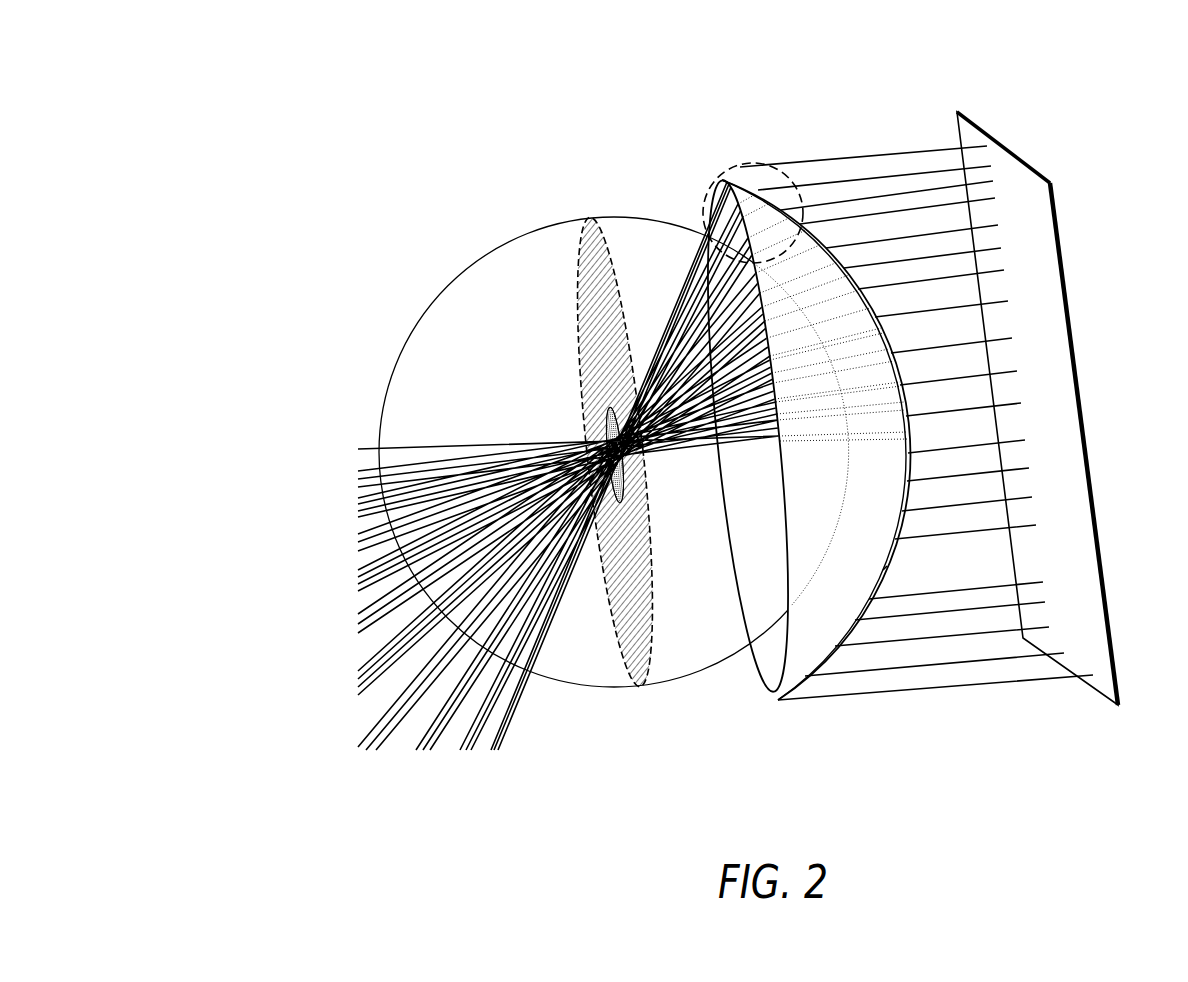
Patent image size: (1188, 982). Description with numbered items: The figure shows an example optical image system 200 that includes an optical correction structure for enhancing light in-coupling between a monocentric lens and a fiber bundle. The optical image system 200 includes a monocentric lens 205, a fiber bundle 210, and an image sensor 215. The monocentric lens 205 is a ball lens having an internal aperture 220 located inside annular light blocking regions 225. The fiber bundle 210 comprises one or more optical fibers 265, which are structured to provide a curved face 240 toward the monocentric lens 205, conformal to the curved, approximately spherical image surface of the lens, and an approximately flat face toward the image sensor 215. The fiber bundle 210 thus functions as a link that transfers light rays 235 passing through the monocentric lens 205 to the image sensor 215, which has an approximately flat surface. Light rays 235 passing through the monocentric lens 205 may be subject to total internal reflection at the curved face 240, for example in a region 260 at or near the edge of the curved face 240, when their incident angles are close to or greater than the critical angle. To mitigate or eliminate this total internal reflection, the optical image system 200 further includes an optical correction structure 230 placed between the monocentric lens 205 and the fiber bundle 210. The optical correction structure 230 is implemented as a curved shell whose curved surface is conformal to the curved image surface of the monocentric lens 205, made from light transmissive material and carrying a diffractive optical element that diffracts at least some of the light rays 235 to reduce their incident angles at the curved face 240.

The optical image system 200 is at (306, 141).
The monocentric lens 205 is at (519, 315).
The fiber bundle 210 is at (1040, 555).
The image sensor 215 is at (1070, 300).
The internal aperture 220 is at (604, 410).
The annular light blocking regions 225 is at (633, 575).
The optical correction structure 230 is at (765, 665).
The light rays 235 is at (362, 447).
The curved face 240 is at (803, 683).
The region 260 is at (703, 198).
The optical fibers 265 is at (927, 692).